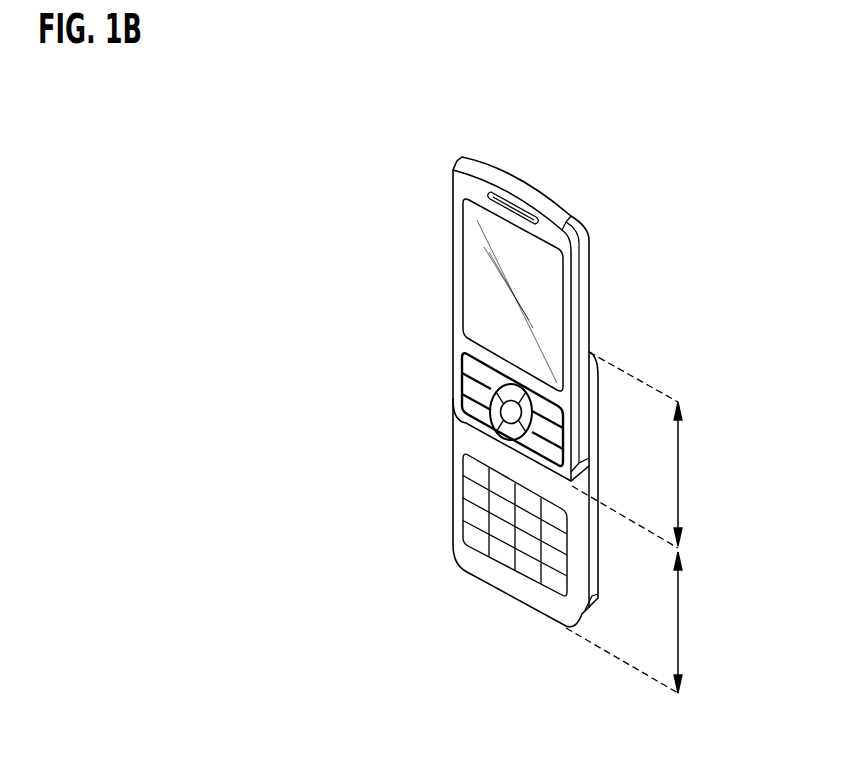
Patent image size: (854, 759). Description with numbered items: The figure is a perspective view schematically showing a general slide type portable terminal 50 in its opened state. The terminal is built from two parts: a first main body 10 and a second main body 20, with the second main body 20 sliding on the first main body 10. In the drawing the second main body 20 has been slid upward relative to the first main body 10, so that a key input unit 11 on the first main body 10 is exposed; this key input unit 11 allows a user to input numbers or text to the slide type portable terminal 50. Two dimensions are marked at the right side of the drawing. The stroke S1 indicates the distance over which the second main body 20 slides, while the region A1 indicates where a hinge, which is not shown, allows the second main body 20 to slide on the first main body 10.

The slide type portable terminal 50 is at (414, 110).
The second main body 20 is at (443, 287).
The first main body 10 is at (594, 624).
The key input unit 11 is at (475, 493).
The hinge region A1 is at (645, 450).
The stroke S1 is at (641, 622).